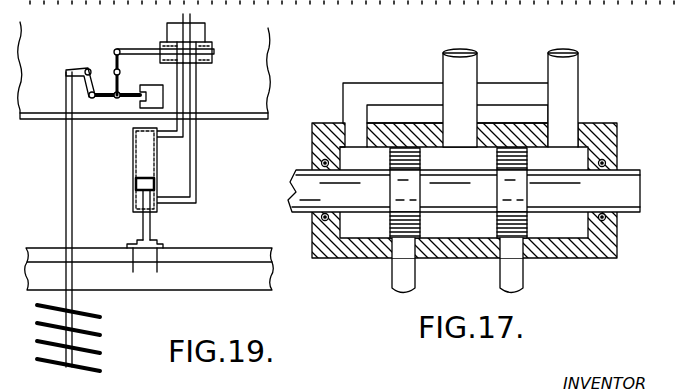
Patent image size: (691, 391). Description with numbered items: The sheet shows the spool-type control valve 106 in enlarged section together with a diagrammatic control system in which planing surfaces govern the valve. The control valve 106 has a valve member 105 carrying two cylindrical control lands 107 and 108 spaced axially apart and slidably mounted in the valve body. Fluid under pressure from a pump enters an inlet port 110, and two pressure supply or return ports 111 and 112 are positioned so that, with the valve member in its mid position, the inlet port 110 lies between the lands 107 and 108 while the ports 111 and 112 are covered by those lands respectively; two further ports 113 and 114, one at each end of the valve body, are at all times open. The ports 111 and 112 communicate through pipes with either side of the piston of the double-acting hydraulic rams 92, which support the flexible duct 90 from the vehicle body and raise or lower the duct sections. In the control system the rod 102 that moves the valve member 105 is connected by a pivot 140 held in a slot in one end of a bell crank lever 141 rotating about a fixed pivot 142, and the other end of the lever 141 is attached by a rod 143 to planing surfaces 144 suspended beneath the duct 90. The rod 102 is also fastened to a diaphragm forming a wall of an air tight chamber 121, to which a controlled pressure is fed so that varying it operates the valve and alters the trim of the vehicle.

In FIG. 19, the flexible duct 90 is at (231, 277).
In FIG. 19, the hydraulic rams 92 is at (157, 163).
In FIG. 19, the rod 102 is at (98, 113).
In FIG. 17, the valve member 105 is at (305, 200).
In FIG. 19, the control valve 106 is at (210, 45).
In FIG. 17, the control valve 106 is at (600, 135).
In FIG. 17, the control land 107 is at (392, 270).
In FIG. 17, the control land 108 is at (500, 270).
In FIG. 17, the inlet port 110 is at (458, 135).
In FIG. 19, the pressure supply or return port 111 is at (181, 66).
In FIG. 17, the pressure supply or return port 111 is at (415, 265).
In FIG. 19, the pressure supply or return port 112 is at (197, 67).
In FIG. 17, the pressure supply or return port 112 is at (525, 265).
In FIG. 17, the port 113 is at (350, 135).
In FIG. 17, the port 114 is at (563, 138).
In FIG. 19, the air tight chamber 121 is at (152, 80).
In FIG. 19, the pivot 140 is at (88, 96).
In FIG. 19, the bell crank lever 141 is at (77, 69).
In FIG. 19, the fixed pivot 142 is at (88, 67).
In FIG. 19, the rod 143 is at (67, 158).
In FIG. 19, the planing surfaces 144 is at (96, 357).